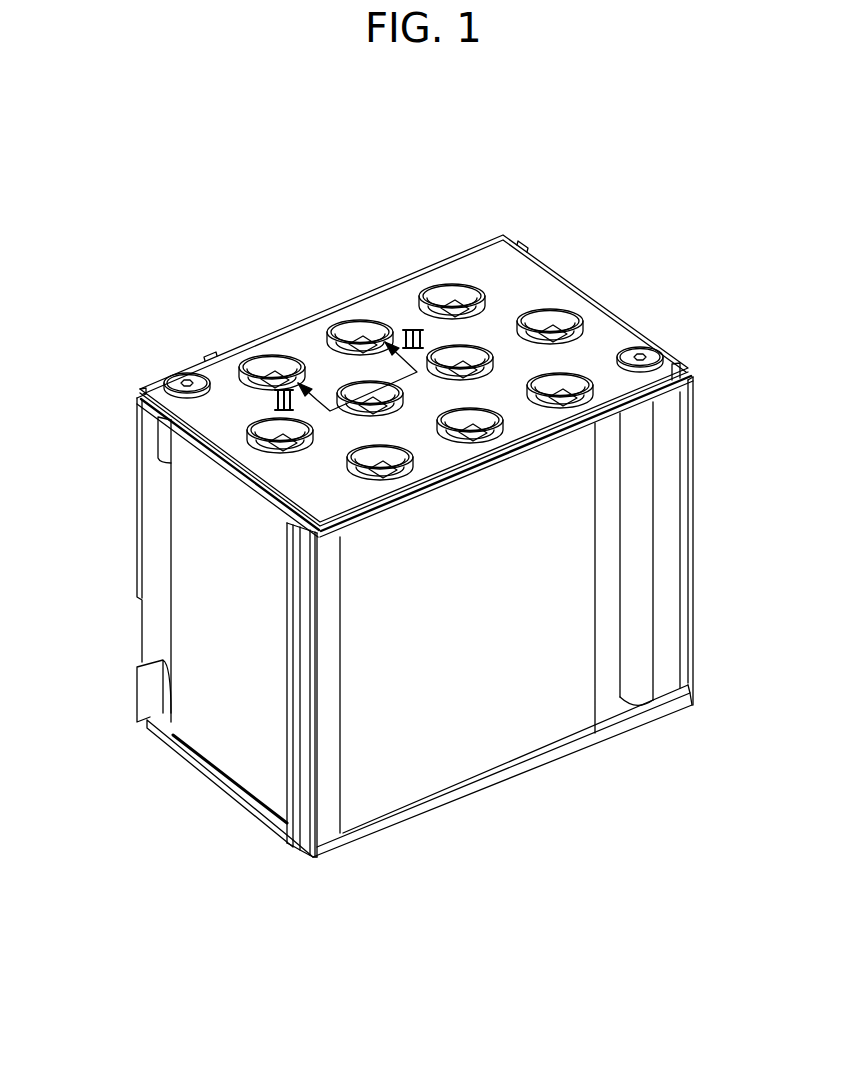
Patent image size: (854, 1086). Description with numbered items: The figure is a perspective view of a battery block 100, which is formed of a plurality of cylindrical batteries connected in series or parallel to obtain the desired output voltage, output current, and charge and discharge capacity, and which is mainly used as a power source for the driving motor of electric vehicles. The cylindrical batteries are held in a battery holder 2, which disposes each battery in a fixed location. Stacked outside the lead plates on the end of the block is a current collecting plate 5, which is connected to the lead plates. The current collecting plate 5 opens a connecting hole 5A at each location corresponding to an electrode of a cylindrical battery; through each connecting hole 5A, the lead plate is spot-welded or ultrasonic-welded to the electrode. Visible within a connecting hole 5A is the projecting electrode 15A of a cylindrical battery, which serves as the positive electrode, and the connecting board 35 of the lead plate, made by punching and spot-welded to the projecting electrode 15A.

The battery block 100 is at (197, 172).
The battery holder 2 is at (458, 728).
The current collecting plate 5 is at (527, 277).
The connecting hole 5A is at (337, 320).
The projecting electrode 15A is at (353, 337).
The connecting board 35 is at (387, 330).